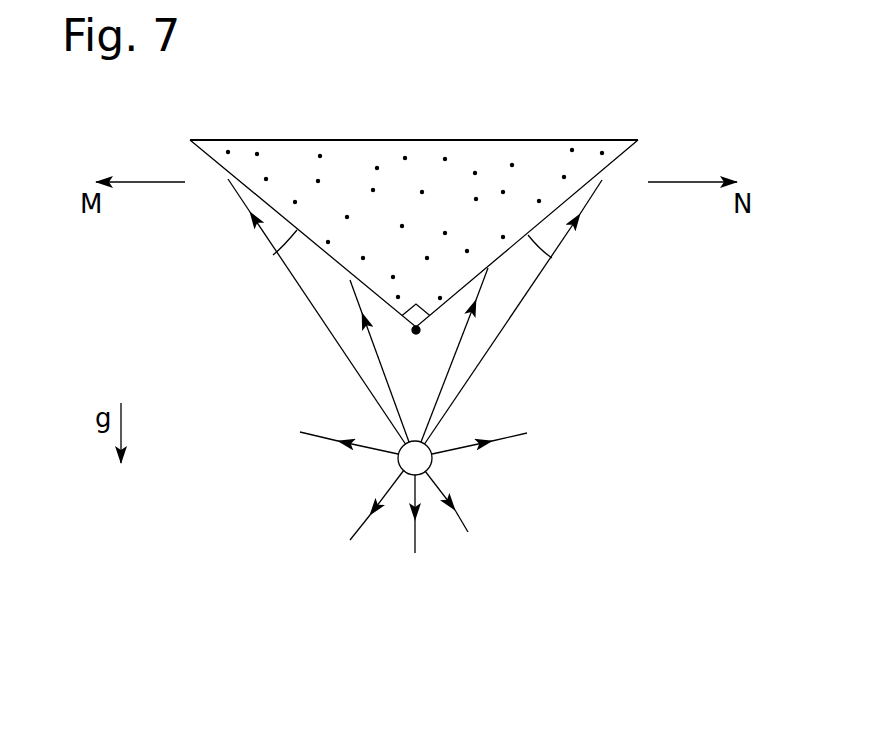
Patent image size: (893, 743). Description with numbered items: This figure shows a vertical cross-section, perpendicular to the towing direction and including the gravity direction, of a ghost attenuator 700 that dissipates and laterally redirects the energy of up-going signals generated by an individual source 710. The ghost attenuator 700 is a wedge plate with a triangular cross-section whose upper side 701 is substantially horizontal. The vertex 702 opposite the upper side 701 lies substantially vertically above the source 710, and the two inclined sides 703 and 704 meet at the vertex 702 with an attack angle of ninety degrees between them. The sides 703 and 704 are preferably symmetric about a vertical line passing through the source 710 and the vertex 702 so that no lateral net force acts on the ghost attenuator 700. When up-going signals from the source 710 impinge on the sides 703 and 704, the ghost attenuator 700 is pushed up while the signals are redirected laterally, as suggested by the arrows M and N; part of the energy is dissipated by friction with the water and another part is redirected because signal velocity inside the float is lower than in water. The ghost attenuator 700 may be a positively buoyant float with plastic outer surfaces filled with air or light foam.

The ghost attenuator 700 is at (593, 148).
The upper side 701 is at (245, 138).
The vertex 702 is at (414, 334).
The side 703 is at (273, 255).
The side 704 is at (552, 258).
The individual source 710 is at (432, 459).